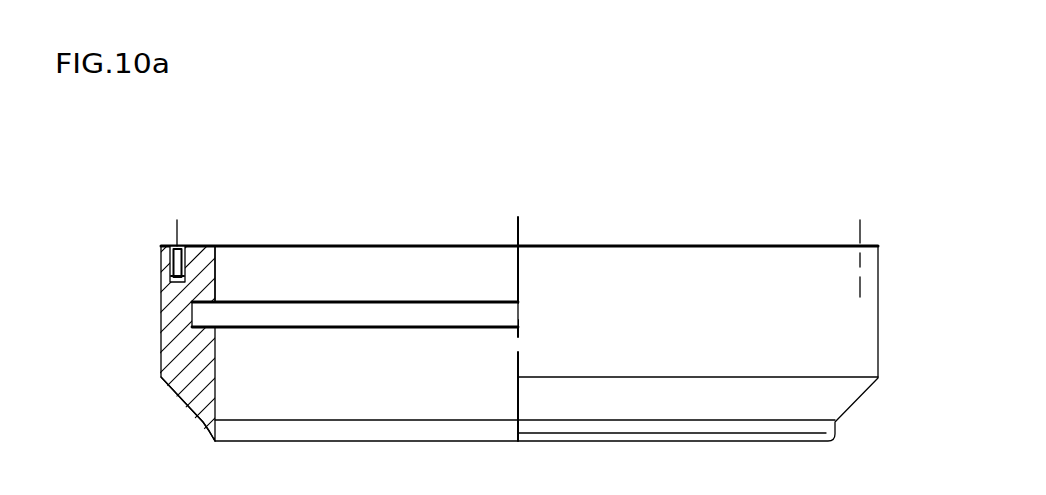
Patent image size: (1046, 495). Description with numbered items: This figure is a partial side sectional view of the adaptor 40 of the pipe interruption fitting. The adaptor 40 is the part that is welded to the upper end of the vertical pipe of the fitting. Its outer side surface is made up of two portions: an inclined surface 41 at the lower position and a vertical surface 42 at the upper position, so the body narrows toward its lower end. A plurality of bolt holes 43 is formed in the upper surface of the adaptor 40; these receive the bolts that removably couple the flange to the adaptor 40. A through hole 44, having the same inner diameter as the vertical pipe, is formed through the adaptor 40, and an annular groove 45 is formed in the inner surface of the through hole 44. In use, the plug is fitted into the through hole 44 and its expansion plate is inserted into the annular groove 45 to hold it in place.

The adaptor 40 is at (692, 217).
The inclined surface 41 is at (163, 378).
The vertical surface 42 is at (160, 331).
The bolt holes 43 is at (182, 248).
The through hole 44 is at (213, 268).
The annular groove 45 is at (368, 315).